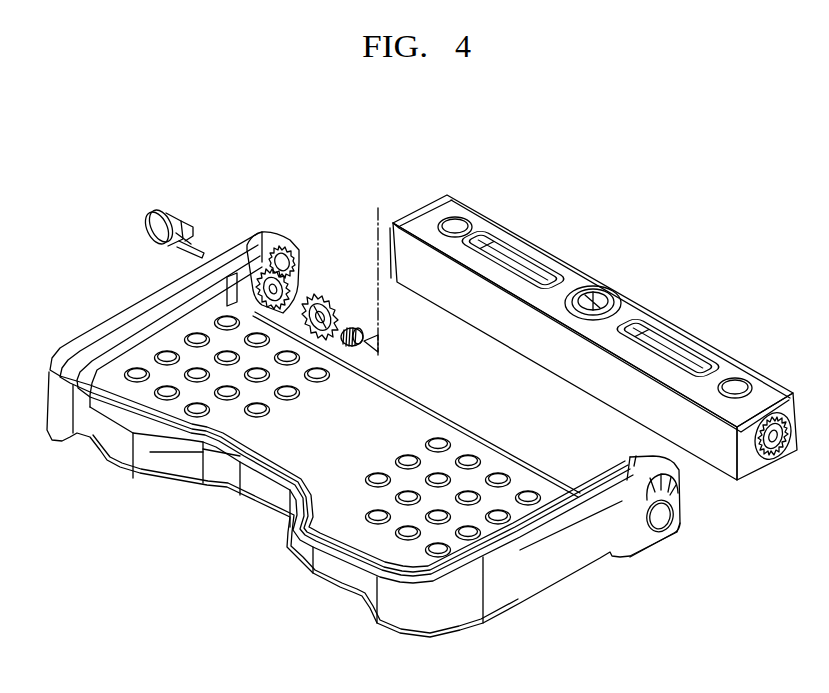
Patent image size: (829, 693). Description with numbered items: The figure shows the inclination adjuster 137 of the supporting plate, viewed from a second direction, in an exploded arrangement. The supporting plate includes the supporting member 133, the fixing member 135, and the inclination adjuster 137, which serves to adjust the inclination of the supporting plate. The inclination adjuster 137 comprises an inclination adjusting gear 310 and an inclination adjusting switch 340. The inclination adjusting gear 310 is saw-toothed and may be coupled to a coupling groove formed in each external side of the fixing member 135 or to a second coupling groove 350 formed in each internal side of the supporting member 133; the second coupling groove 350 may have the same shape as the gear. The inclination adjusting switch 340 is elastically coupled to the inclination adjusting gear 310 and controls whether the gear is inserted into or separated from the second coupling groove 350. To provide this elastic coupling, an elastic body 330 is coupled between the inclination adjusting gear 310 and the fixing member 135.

The supporting member 133 is at (547, 578).
The fixing member 135 is at (584, 275).
The inclination adjuster 137 is at (593, 294).
The inclination adjusting gear 310 is at (326, 295).
The elastic body 330 is at (365, 335).
The inclination adjusting switch 340 is at (173, 213).
The second coupling groove 350 is at (301, 270).